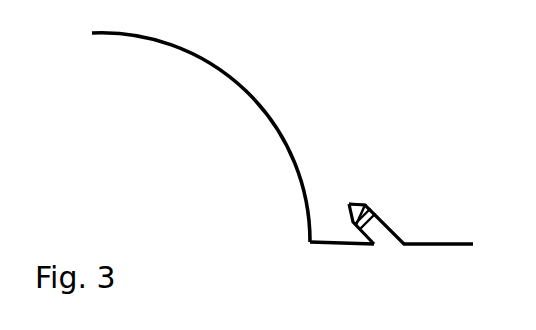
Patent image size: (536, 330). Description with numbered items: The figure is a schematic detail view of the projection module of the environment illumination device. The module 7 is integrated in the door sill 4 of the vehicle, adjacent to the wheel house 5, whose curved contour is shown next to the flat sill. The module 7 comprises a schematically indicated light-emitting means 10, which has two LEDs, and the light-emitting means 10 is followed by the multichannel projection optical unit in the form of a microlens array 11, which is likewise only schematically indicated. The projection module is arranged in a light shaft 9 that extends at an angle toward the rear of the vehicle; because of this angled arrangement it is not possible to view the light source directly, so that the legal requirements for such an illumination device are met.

The base surface 4 is at (462, 246).
The curved wall 5 is at (261, 102).
The contact region 7 is at (348, 181).
The tool 9 is at (387, 246).
The tool tip 10 is at (366, 204).
The cutting edge marking 11 is at (372, 213).